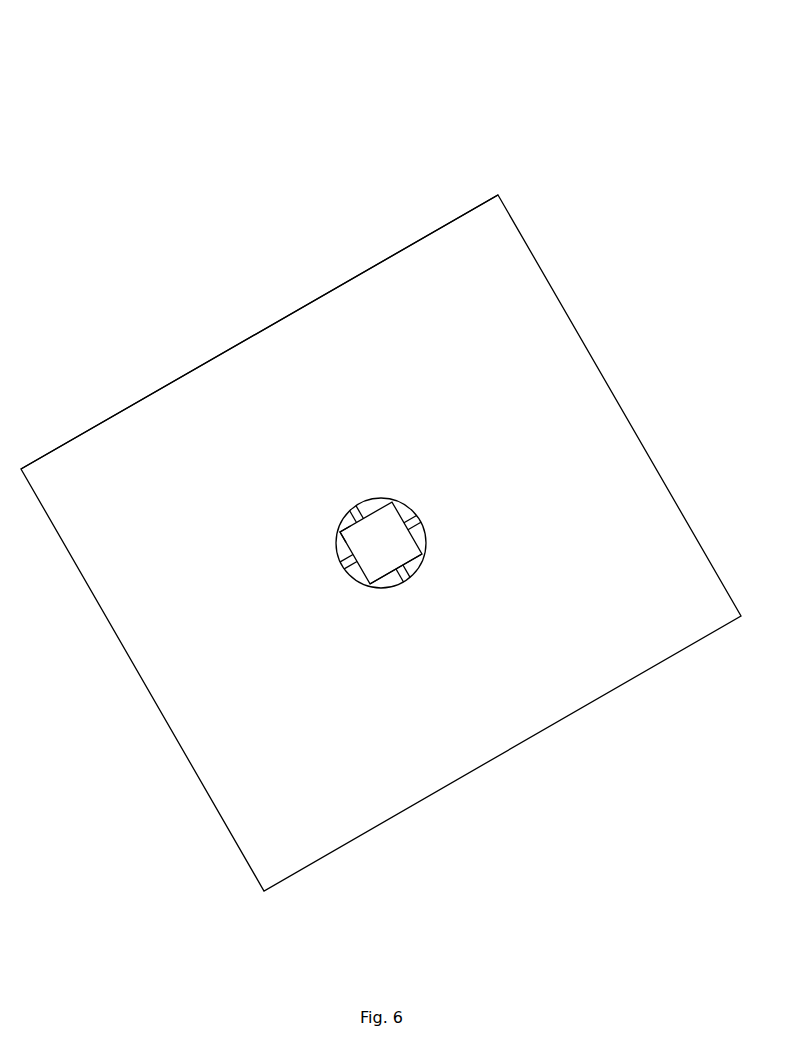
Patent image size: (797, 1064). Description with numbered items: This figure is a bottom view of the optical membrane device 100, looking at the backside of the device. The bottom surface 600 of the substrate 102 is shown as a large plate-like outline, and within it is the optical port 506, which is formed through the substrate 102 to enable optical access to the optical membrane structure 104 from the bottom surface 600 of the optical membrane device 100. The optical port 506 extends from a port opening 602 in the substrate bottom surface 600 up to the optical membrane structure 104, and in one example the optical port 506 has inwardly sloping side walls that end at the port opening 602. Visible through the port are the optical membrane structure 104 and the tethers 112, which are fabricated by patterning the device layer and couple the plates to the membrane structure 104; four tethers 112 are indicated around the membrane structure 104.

The optical membrane device 100 is at (492, 88).
The substrate 102 is at (603, 344).
The optical membrane structure 104 is at (389, 527).
The tethers 112 is at (358, 503).
The optical port 506 is at (378, 591).
The bottom surface 600 is at (144, 437).
The port opening 602 is at (340, 531).